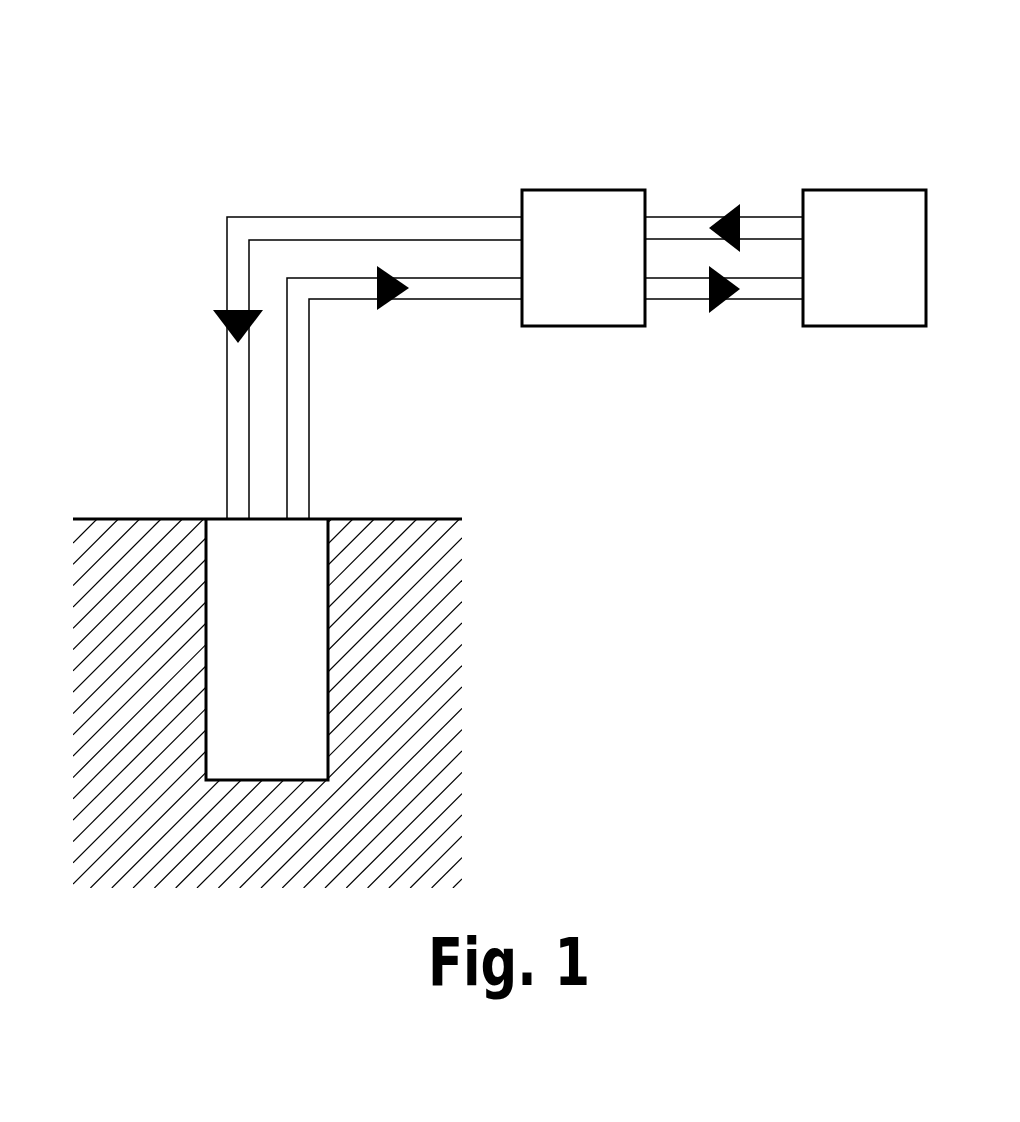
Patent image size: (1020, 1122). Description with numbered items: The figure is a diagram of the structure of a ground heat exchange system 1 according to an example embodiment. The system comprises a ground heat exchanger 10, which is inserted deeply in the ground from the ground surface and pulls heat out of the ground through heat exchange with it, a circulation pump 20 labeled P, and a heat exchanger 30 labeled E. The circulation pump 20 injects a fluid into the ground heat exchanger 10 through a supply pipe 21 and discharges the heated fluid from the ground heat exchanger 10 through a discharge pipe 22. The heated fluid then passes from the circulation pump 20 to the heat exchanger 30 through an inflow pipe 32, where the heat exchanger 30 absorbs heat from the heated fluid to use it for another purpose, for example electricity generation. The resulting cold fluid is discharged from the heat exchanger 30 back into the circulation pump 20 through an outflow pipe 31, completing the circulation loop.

The ground heat exchange system 1 is at (517, 33).
The ground heat exchanger 10 is at (303, 663).
The circulation pump 20 is at (584, 189).
The supply pipe 21 is at (439, 216).
The discharge pipe 22 is at (446, 300).
The heat exchanger 30 is at (864, 189).
The outflow pipe 31 is at (684, 216).
The inflow pipe 32 is at (690, 300).